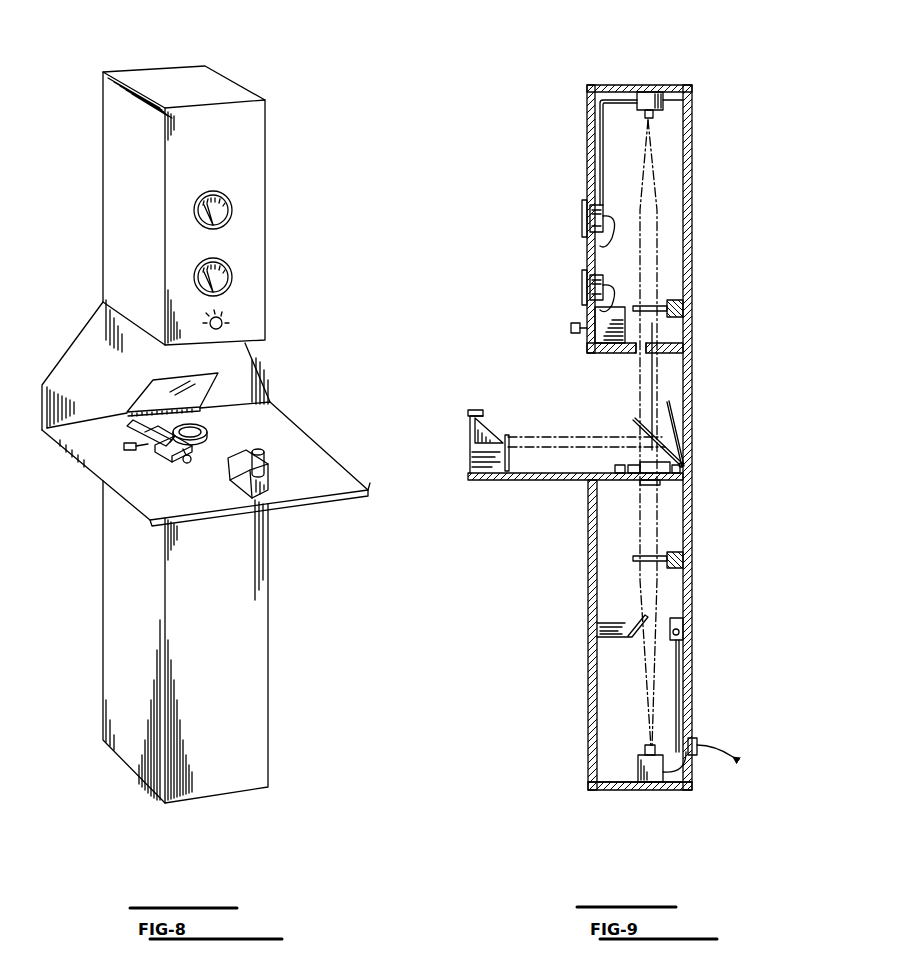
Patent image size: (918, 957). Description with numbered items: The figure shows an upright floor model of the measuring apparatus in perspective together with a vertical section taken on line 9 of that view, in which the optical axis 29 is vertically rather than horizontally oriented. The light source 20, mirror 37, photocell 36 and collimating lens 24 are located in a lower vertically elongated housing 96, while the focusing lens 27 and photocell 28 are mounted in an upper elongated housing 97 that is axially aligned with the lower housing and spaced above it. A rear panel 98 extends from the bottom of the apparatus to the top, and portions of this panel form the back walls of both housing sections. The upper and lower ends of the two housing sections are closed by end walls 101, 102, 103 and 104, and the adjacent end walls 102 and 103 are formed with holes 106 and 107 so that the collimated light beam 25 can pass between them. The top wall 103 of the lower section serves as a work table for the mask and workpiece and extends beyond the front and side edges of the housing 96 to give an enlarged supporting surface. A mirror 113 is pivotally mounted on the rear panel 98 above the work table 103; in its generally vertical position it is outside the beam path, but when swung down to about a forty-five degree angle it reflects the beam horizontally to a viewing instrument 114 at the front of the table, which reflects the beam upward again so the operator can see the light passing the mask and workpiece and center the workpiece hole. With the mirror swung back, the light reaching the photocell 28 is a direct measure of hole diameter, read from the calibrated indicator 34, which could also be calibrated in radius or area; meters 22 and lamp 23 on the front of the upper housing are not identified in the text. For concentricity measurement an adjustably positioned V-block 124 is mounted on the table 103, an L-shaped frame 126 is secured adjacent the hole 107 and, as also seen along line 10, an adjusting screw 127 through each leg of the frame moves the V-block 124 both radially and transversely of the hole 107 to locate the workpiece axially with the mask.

In FIG. 8, the section line 9— 9 is at (220, 15).
In FIG. 9, the section line 10— 10 is at (652, 448).
In FIG. 9, the light source 20 is at (660, 745).
In FIG. 8, the meter 22 is at (233, 276).
In FIG. 9, the meter 22 is at (585, 287).
In FIG. 8, the indicator lamp 23 is at (224, 322).
In FIG. 9, the indicator lamp 23 is at (571, 328).
In FIG. 9, the collimating lens 24 is at (645, 562).
In FIG. 9, the collimated light beam 25 is at (638, 393).
In FIG. 9, the focusing lens 27 is at (650, 305).
In FIG. 9, the photocell 28 is at (665, 110).
In FIG. 9, the optical axis 29 is at (655, 387).
In FIG. 8, the calibrated indicator 34 is at (236, 210).
In FIG. 9, the calibrated indicator 34 is at (582, 215).
In FIG. 9, the photocell 36 is at (673, 614).
In FIG. 9, the mirror 37 is at (640, 620).
In FIG. 8, the lower housing 96 is at (265, 702).
In FIG. 9, the lower housing 96 is at (588, 702).
In FIG. 8, the upper housing 97 is at (258, 147).
In FIG. 9, the upper housing 97 is at (587, 138).
In FIG. 8, the rear panel 98 is at (82, 336).
In FIG. 9, the rear panel 98 is at (692, 212).
In FIG. 9, the end wall 101 is at (660, 86).
In FIG. 9, the end wall 102 is at (608, 353).
In FIG. 8, the top wall (work table) 103 is at (327, 458).
In FIG. 9, the top wall (work table) 103 is at (550, 482).
In FIG. 9, the end wall 104 is at (615, 792).
In FIG. 9, the hole 106 is at (657, 347).
In FIG. 8, the hole 107 is at (205, 443).
In FIG. 9, the hole 107 is at (652, 481).
In FIG. 8, the mirror 113 is at (205, 392).
In FIG. 9, the mirror 113 is at (672, 422).
In FIG. 8, the viewing instrument 114 is at (268, 470).
In FIG. 9, the viewing instrument 114 is at (470, 433).
In FIG. 8, the V-block 124 is at (160, 456).
In FIG. 8, the L-shaped frame 126 is at (166, 478).
In FIG. 8, the adjusting screw 127 is at (122, 450).